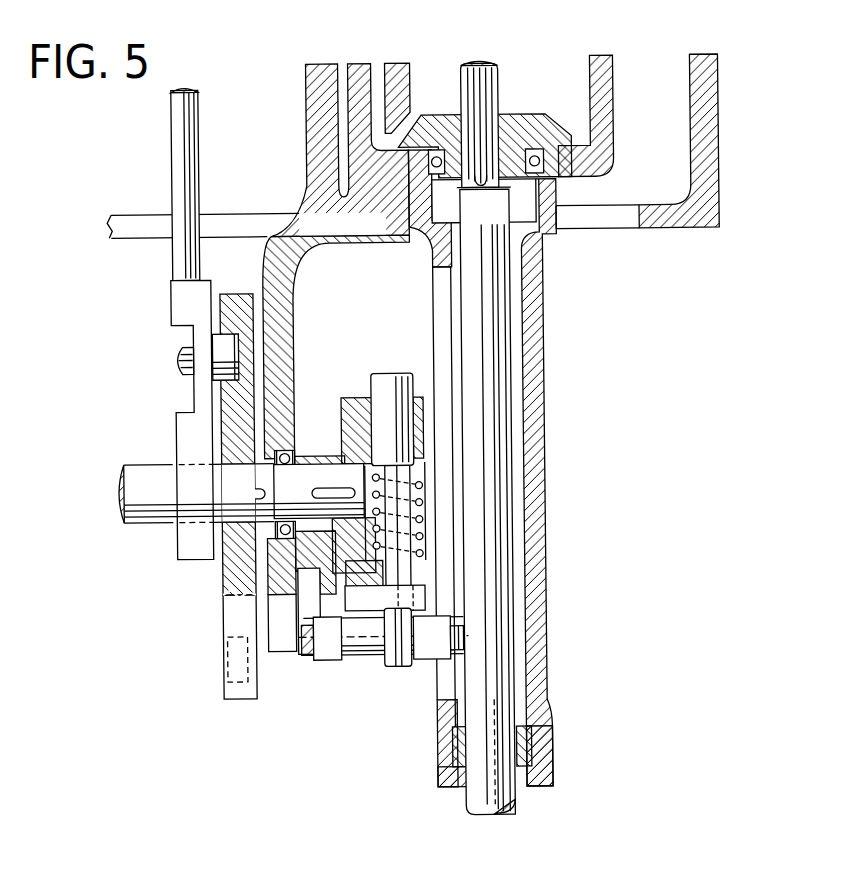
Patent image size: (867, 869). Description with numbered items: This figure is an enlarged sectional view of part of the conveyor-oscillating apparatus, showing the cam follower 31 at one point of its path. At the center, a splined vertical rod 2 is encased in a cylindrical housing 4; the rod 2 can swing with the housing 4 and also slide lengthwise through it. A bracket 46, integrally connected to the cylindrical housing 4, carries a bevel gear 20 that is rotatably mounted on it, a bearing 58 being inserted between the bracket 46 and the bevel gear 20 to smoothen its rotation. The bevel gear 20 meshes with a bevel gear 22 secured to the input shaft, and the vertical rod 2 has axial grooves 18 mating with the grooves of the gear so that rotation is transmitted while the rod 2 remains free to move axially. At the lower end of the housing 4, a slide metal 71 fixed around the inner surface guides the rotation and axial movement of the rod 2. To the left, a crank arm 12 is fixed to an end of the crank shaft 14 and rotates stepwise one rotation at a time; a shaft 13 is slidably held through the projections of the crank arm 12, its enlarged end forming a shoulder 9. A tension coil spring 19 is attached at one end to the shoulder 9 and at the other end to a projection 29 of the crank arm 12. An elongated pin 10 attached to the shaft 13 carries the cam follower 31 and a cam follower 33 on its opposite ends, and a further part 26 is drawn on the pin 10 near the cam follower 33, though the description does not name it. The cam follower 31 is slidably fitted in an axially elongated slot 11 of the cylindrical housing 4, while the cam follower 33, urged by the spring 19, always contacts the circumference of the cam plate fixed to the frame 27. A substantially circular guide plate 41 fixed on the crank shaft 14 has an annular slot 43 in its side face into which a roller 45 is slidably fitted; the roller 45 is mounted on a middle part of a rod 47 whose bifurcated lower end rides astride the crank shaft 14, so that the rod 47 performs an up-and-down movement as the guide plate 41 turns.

The splined vertical rod 2 is at (497, 285).
The cylindrical housing 4 is at (532, 320).
The shoulder 9 is at (410, 470).
The elongated pin 10 is at (355, 637).
The axially elongated slot 11 is at (440, 292).
The crank arm 12 is at (357, 400).
The shaft 13 is at (390, 375).
The crank shaft 14 is at (152, 468).
The axial grooves 18 is at (485, 88).
The tension coil spring 19 is at (418, 503).
The bevel gear 20 is at (523, 128).
The bevel gear 22 is at (397, 65).
The gear 26 is at (325, 605).
The frame 27 is at (318, 230).
The projection 29 is at (424, 585).
The cam follower 31 is at (428, 638).
The cam follower 33 is at (315, 648).
The guide plate 41 is at (228, 573).
The annular slot 43 is at (233, 656).
The roller 45 is at (218, 347).
The bracket 46 is at (606, 78).
The rod 47 is at (183, 143).
The bearing 58 is at (540, 162).
The slide metal 71 is at (527, 740).